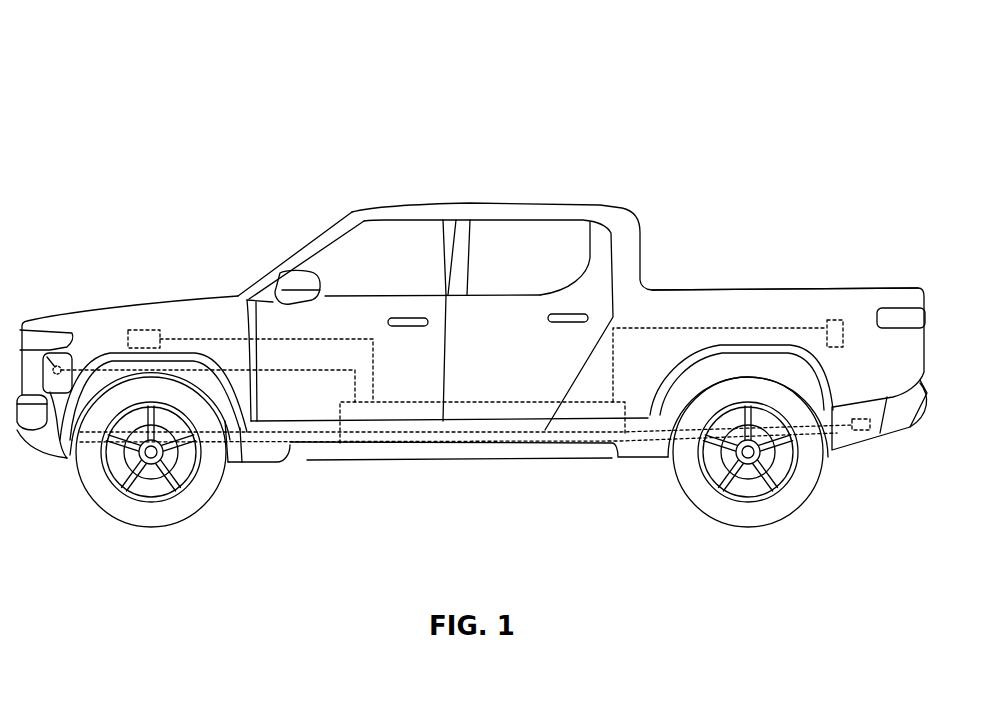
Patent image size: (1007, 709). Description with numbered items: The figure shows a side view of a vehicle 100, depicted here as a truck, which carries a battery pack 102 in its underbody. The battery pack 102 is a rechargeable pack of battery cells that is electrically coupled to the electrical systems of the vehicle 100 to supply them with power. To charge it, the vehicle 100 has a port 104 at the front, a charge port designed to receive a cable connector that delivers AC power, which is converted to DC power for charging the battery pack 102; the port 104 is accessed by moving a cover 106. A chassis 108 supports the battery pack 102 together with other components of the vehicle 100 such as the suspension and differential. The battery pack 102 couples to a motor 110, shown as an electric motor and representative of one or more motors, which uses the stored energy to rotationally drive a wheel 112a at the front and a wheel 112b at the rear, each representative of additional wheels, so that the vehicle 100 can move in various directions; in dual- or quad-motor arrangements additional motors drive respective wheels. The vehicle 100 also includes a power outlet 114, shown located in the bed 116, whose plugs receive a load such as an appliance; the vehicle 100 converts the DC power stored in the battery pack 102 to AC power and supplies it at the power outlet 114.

The vehicle 100 is at (137, 120).
The battery pack 102 is at (328, 445).
The port 104 is at (50, 345).
The cover 106 is at (54, 392).
The chassis 108 is at (636, 447).
The motor 110 is at (143, 328).
The wheel 112a is at (76, 478).
The wheel 112b is at (826, 470).
The power outlet 114 is at (828, 318).
The bed 116 is at (730, 286).